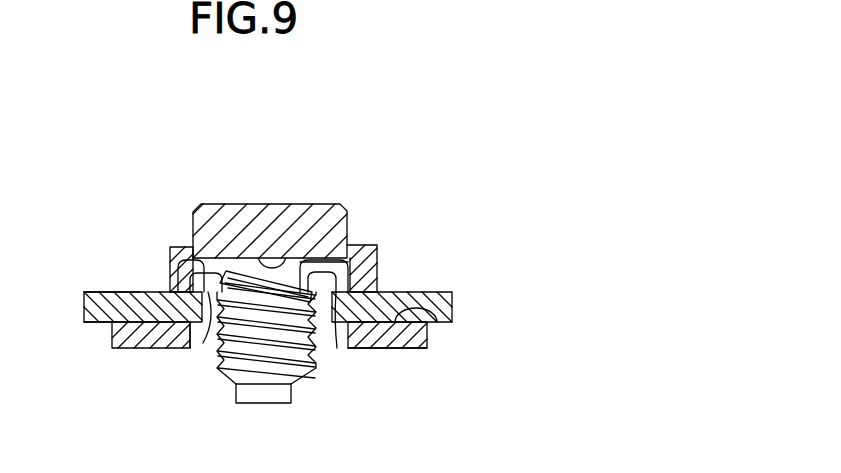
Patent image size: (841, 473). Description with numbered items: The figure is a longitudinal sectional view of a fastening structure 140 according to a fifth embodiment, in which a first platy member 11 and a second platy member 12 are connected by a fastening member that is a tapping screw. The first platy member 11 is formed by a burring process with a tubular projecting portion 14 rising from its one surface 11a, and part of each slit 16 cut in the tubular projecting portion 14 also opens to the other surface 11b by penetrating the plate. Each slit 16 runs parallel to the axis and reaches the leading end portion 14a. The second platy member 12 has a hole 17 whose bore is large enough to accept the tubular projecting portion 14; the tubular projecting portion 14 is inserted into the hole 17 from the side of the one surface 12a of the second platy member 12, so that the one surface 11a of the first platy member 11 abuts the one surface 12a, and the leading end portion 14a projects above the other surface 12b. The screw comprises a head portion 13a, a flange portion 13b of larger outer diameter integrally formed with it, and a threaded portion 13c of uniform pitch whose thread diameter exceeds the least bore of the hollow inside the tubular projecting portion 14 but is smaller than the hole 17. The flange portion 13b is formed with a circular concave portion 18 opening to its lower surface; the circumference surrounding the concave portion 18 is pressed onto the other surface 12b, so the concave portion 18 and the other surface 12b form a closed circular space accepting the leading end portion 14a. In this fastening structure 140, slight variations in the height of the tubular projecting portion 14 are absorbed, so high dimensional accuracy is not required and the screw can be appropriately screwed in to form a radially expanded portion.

The fastening structure 140 is at (299, 144).
The head portion 13a is at (304, 203).
The flange portion 13b is at (378, 270).
The threaded portion 13c is at (219, 378).
The tubular projecting portion 14 is at (203, 293).
The leading end portion 14a is at (352, 259).
The concave portion 18 is at (348, 222).
The second platy member 12 is at (452, 305).
The one surface of the second platy member 12a is at (96, 323).
The other surface of the second platy member 12b is at (110, 291).
The first platy member 11 is at (137, 348).
The one surface of the first platy member 11a is at (435, 325).
The other surface of the first platy member 11b is at (398, 348).
The slit 16 is at (338, 342).
The hole 17 is at (203, 343).